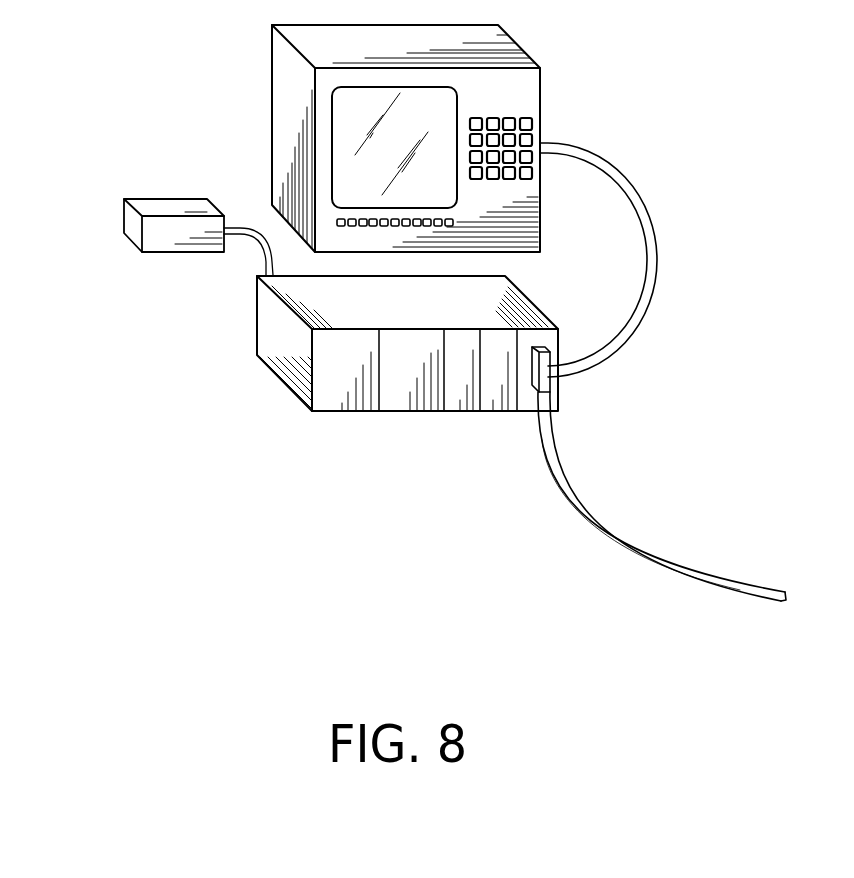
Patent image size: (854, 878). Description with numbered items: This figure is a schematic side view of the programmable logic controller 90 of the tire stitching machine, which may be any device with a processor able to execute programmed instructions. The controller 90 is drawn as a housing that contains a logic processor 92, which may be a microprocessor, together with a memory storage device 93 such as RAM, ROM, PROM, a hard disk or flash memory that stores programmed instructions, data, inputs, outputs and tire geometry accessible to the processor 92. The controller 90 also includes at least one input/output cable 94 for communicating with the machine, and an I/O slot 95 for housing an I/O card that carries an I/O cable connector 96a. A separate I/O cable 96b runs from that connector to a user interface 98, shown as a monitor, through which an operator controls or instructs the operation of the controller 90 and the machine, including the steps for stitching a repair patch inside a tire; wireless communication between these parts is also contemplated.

The programmable logic controller 90 is at (221, 424).
The logic processor 92 is at (257, 337).
The memory storage device 93 is at (124, 232).
The input/output cable 94 is at (640, 557).
The I/O slot 95 is at (398, 407).
The I/O cable connector 96a is at (533, 373).
The I/O cable 96b is at (654, 248).
The user interface 98 is at (533, 62).